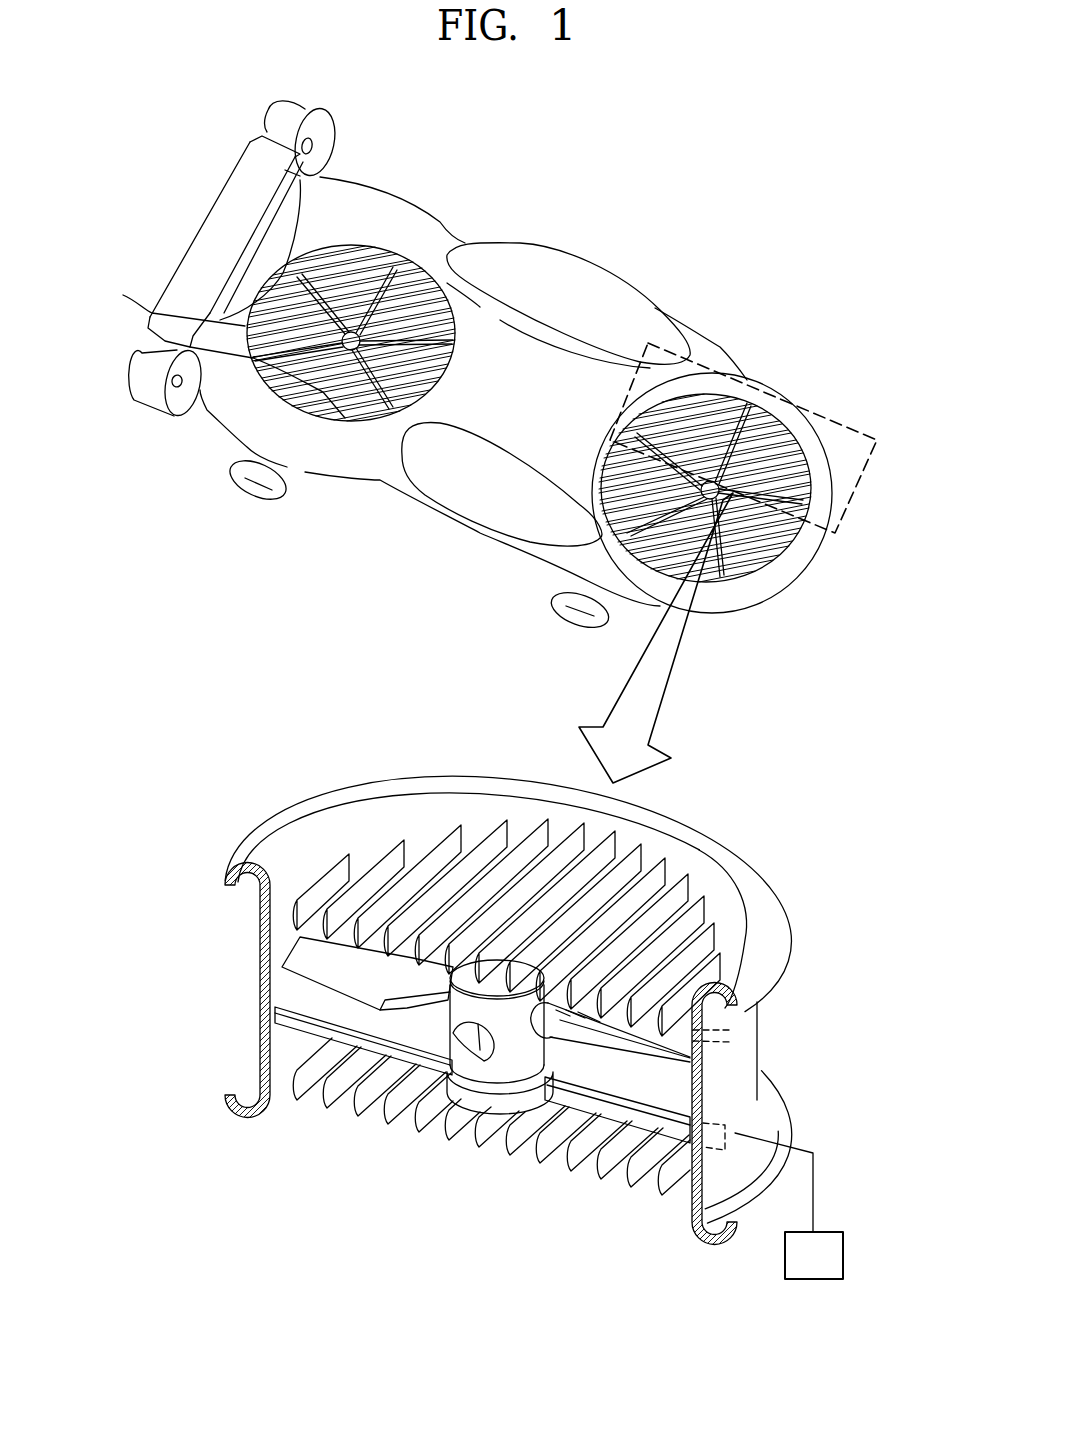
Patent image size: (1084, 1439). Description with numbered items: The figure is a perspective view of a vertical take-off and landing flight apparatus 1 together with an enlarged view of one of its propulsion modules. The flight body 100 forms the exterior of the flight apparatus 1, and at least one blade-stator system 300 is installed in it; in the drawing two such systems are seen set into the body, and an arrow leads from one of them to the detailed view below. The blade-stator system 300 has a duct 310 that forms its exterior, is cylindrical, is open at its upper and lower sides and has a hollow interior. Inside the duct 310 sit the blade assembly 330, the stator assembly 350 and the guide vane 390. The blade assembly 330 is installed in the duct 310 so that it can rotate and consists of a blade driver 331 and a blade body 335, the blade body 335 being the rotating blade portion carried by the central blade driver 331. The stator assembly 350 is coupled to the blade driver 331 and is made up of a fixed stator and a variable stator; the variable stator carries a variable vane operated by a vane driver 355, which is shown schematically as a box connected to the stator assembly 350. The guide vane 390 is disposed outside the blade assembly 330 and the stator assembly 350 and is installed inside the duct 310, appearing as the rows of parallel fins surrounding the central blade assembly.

The vertical take-off and landing flight apparatus 1 is at (832, 158).
The flight body 100 is at (514, 232).
The blade-stator system 300 is at (230, 324).
The duct 310 is at (777, 905).
The blade assembly 330 is at (460, 1232).
The blade driver 331 is at (510, 1040).
The blade body 335 is at (380, 982).
The stator assembly 350 is at (648, 1058).
The vane driver 355 is at (810, 1280).
The guide vane 390 is at (375, 863).